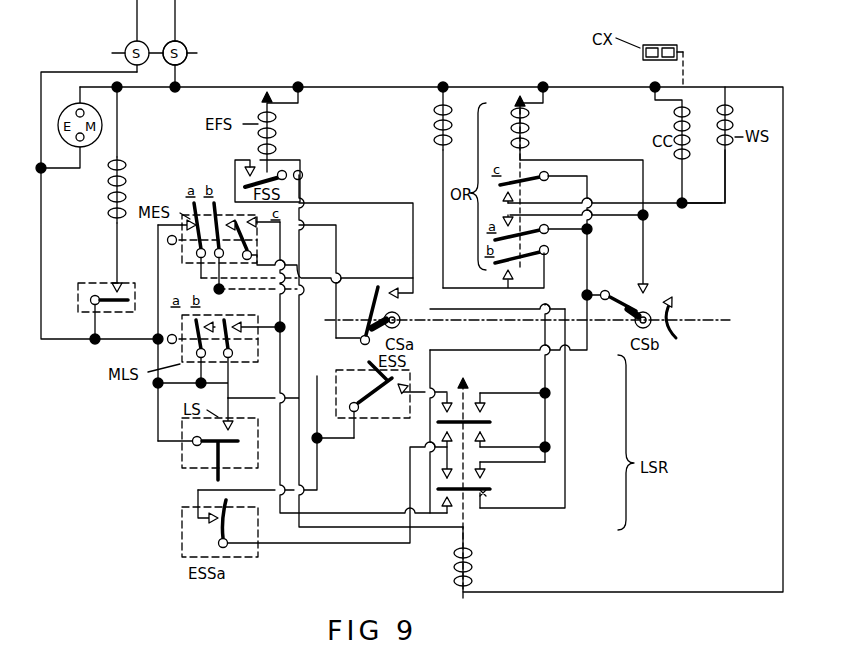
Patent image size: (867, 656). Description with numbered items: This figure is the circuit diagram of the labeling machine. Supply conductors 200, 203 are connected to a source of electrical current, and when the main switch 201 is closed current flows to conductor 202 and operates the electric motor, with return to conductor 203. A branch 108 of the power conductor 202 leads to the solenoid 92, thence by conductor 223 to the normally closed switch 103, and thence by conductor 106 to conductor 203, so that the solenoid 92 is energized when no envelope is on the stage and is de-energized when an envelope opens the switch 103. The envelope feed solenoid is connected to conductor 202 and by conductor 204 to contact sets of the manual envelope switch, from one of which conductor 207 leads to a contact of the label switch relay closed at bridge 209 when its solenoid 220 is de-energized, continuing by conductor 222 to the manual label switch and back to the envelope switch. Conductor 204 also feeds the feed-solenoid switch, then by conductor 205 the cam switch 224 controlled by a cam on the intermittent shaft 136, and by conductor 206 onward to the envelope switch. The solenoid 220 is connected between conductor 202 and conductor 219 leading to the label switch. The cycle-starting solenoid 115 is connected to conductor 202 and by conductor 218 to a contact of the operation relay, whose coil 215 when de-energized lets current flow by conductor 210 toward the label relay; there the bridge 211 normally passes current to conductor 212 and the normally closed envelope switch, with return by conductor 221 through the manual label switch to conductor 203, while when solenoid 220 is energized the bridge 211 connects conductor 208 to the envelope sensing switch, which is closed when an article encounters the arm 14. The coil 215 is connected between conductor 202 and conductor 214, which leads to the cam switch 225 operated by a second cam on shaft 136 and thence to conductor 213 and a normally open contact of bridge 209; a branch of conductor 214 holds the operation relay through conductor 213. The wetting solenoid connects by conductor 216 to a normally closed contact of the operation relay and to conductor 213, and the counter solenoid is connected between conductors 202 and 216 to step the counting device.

The supply conductor 200 is at (177, 17).
The main switch 201 is at (193, 52).
The power conductor 202 is at (258, 85).
The supply conductor 203 is at (55, 73).
The branch of the power conductor 108 is at (120, 107).
The solenoid 92 is at (123, 157).
The conductor 223 is at (115, 237).
The normally closed switch 103 is at (107, 282).
The conductor 106 is at (97, 327).
The conductor 205 is at (235, 170).
The conductor 204 is at (302, 190).
The conductor 206 is at (333, 233).
The conductor 207 is at (412, 277).
The conductor 222 is at (279, 268).
The conductor 221 is at (198, 499).
The conductor 219 is at (268, 398).
The conductor 212 is at (265, 546).
The cam switch 224 is at (366, 318).
The arm 14 is at (377, 375).
The conductor 208 is at (452, 395).
The bridge 211 is at (485, 423).
The bridge 209 is at (488, 490).
The conductor 210 is at (545, 298).
The conductor 213 is at (530, 350).
The conductor 214 is at (625, 160).
The coil of the operation relay 215 is at (530, 130).
The conductor 216 is at (727, 190).
The conductor 218 is at (443, 175).
The solenoid 115 is at (440, 121).
The cam switch 225 is at (634, 305).
The intermittent shaft 136 is at (694, 318).
The solenoid of the label relay 220 is at (470, 560).